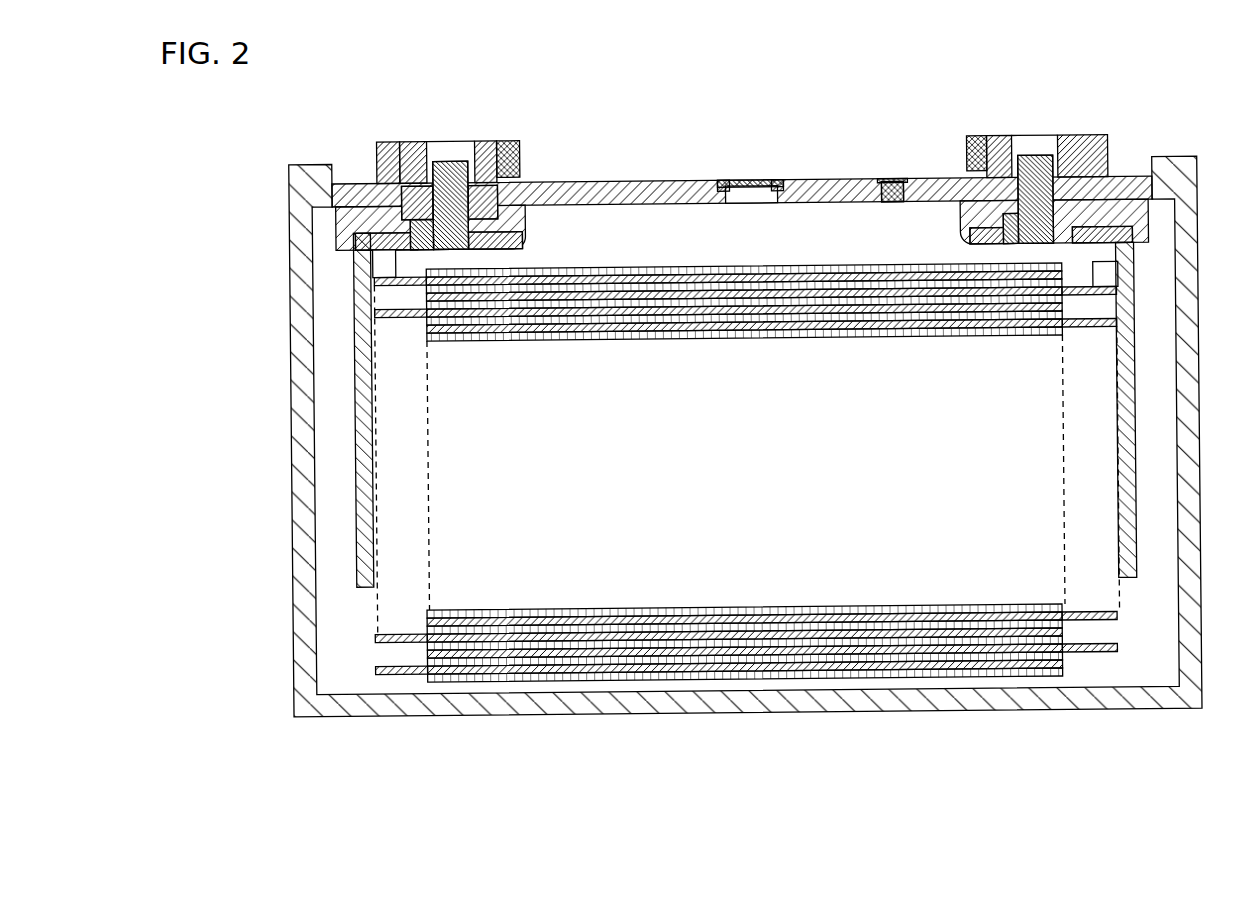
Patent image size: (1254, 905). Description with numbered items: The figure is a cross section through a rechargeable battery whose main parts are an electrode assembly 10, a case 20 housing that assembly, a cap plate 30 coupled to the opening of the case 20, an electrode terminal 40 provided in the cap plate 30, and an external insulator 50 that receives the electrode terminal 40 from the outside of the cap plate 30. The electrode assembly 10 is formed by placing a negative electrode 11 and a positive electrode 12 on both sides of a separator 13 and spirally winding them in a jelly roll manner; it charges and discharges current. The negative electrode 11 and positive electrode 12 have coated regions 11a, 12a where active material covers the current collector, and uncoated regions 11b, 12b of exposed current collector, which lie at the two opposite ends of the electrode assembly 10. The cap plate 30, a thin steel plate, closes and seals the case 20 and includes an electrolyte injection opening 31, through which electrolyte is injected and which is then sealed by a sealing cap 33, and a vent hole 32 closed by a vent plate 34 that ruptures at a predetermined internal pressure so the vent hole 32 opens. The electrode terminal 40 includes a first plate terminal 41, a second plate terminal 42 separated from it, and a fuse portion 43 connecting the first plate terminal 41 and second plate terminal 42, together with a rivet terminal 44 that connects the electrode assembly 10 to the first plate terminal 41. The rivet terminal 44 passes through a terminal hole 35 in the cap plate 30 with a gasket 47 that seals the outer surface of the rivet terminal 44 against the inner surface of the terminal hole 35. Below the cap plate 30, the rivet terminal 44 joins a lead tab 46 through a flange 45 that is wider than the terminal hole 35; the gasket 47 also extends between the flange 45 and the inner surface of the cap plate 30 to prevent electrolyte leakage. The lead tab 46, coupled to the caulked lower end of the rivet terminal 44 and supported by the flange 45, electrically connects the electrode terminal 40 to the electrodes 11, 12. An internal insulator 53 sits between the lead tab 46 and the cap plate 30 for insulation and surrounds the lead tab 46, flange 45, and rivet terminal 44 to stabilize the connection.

The electrode assembly 10 is at (747, 529).
The negative electrode 11 is at (719, 533).
The coated region 11a is at (485, 650).
The uncoated region 11b is at (400, 570).
The positive electrode 12 is at (773, 539).
The coated region 12a is at (1020, 640).
The uncoated region 12b is at (1082, 570).
The separator 13 is at (713, 675).
The case 20 is at (1198, 398).
The cap plate 30 is at (661, 181).
The electrolyte injection opening 31 is at (882, 181).
The vent hole 32 is at (744, 181).
The sealing cap 33 is at (905, 181).
The vent plate 34 is at (777, 181).
The terminal hole 35 is at (478, 158).
The electrode terminal 40 is at (432, 176).
The first plate terminal 41 is at (394, 140).
The second plate terminal 42 is at (414, 140).
The fuse portion 43 is at (520, 152).
The rivet terminal 44 is at (410, 243).
The flange 45 is at (500, 233).
The lead tab 46 is at (357, 346).
The gasket 47 is at (590, 182).
The external insulator 50 is at (438, 134).
The internal insulator 53 is at (342, 229).